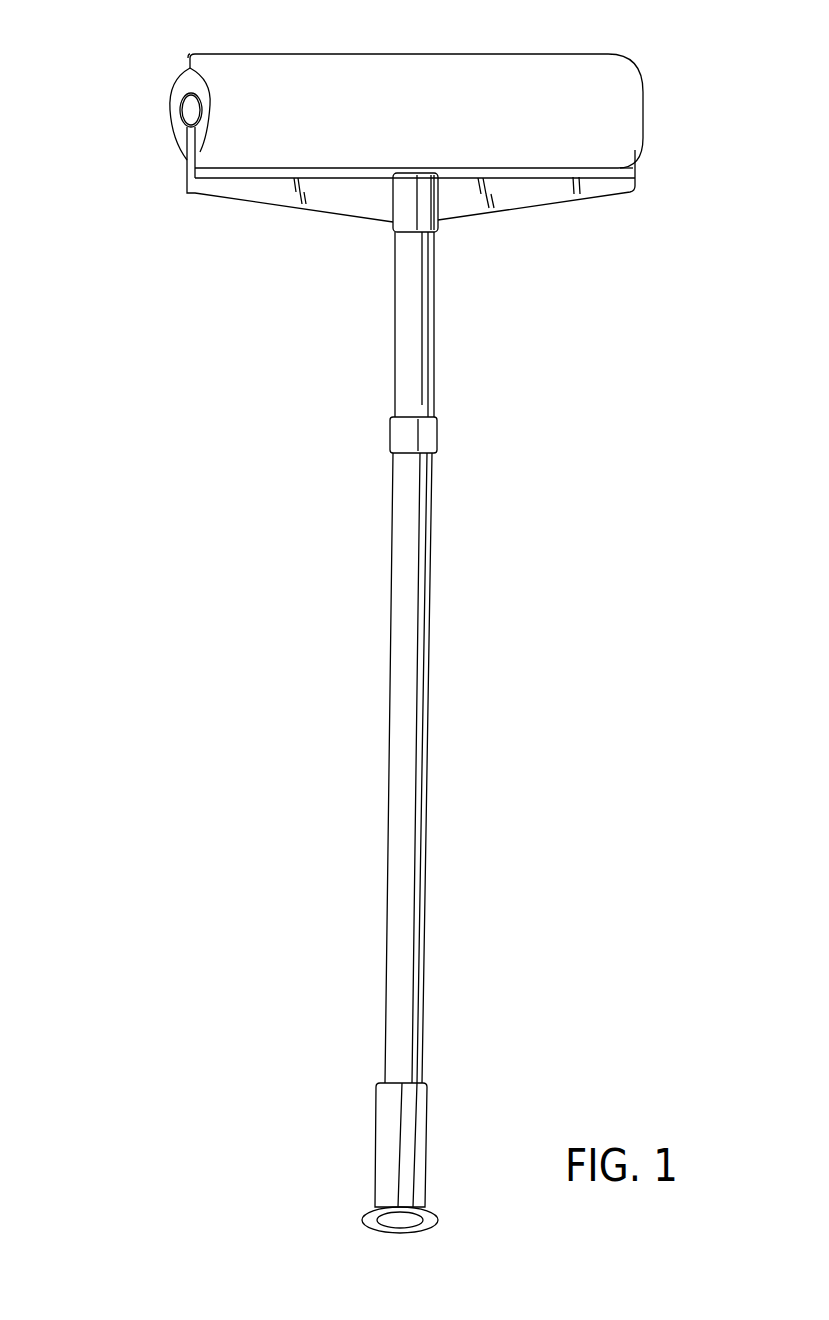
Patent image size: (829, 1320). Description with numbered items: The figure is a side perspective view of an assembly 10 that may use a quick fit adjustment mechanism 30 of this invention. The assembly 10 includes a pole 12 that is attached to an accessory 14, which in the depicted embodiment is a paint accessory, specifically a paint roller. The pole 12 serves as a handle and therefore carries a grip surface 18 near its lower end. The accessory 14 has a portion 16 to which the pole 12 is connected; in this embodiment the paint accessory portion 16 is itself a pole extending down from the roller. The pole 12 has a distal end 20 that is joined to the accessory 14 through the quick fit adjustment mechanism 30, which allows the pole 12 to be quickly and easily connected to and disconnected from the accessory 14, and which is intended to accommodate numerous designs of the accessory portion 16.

The assembly 10 is at (692, 174).
The pole 12 is at (402, 935).
The accessory 14 is at (237, 107).
The portion 16 is at (422, 357).
The grip surface 18 is at (410, 1148).
The distal end 20 is at (248, 520).
The quick fit adjustment mechanism 30 is at (237, 430).